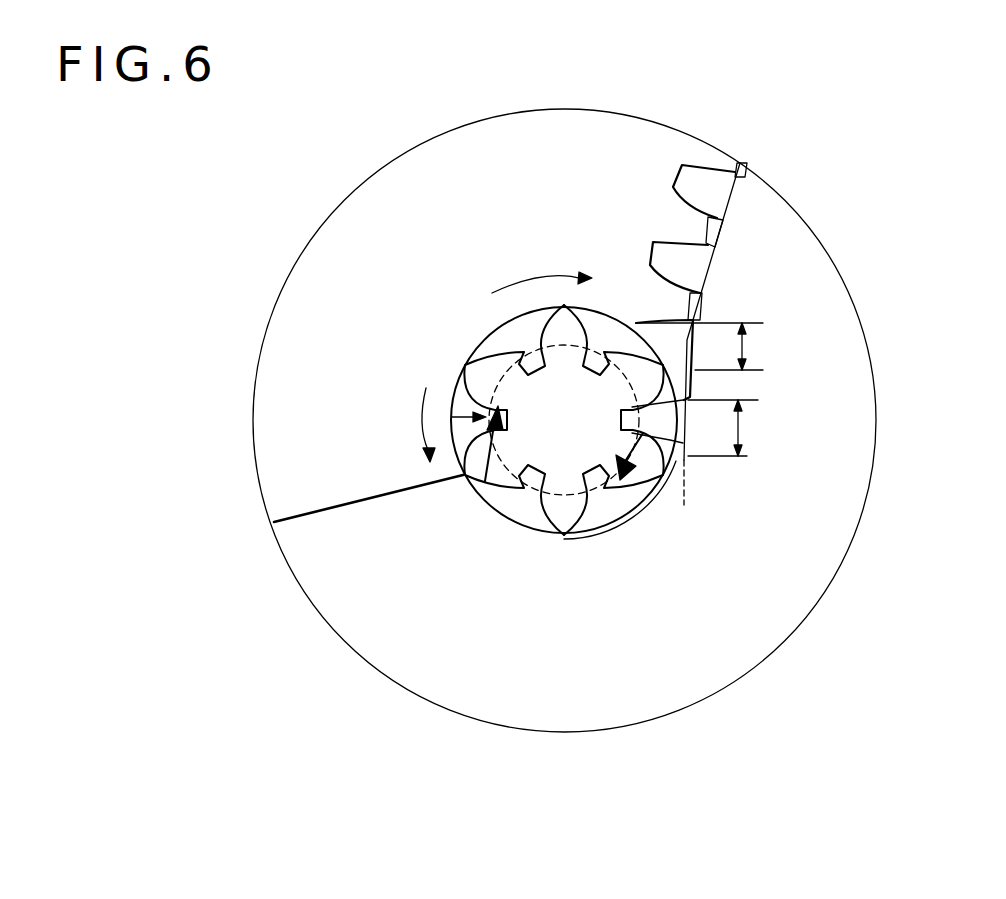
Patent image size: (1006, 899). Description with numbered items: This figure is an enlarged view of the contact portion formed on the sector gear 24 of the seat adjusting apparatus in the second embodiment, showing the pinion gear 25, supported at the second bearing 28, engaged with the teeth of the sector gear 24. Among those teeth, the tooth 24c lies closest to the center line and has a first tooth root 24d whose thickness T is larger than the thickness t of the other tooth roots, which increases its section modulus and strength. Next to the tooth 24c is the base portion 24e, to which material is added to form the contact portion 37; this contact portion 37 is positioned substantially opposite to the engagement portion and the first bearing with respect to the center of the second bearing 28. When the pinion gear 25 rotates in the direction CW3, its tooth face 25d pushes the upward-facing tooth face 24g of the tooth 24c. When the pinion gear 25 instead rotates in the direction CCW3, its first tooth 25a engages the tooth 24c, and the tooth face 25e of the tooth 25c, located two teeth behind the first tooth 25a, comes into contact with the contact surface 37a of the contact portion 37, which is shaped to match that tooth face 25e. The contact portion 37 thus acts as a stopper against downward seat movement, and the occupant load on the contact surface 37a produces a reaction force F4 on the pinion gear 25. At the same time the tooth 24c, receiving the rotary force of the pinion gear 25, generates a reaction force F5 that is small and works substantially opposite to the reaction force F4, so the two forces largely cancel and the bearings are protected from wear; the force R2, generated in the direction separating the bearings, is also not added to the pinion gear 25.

The sector gear 24 is at (757, 290).
The tooth 24c is at (637, 327).
The first tooth root 24d is at (735, 428).
The base portion 24e is at (548, 543).
The tooth face 24g is at (612, 345).
The pinion gear 25 is at (550, 390).
The first tooth 25a is at (673, 457).
The tooth 25c is at (460, 473).
The tooth face 25d is at (693, 390).
The tooth face 25e is at (670, 440).
The second bearing 28 is at (466, 369).
The contact portion 37 is at (477, 480).
The contact surface 37a is at (511, 501).
The force R2 is at (453, 393).
The reaction force F4 is at (482, 467).
The reaction force F5 is at (647, 473).
The clockwise direction CW3 is at (542, 268).
The counterclockwise direction CCW3 is at (396, 425).